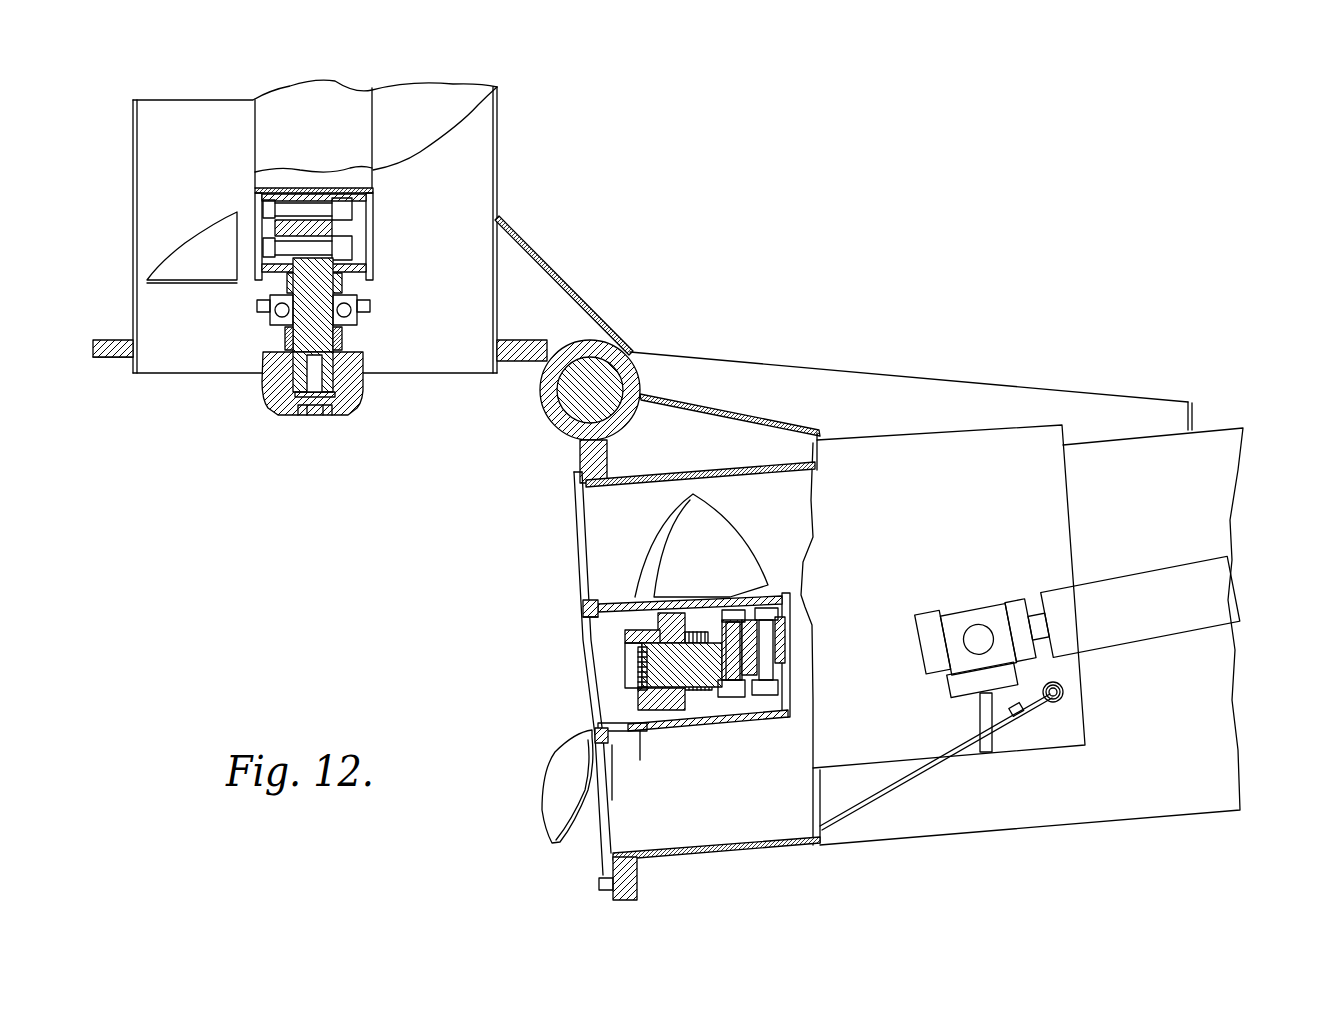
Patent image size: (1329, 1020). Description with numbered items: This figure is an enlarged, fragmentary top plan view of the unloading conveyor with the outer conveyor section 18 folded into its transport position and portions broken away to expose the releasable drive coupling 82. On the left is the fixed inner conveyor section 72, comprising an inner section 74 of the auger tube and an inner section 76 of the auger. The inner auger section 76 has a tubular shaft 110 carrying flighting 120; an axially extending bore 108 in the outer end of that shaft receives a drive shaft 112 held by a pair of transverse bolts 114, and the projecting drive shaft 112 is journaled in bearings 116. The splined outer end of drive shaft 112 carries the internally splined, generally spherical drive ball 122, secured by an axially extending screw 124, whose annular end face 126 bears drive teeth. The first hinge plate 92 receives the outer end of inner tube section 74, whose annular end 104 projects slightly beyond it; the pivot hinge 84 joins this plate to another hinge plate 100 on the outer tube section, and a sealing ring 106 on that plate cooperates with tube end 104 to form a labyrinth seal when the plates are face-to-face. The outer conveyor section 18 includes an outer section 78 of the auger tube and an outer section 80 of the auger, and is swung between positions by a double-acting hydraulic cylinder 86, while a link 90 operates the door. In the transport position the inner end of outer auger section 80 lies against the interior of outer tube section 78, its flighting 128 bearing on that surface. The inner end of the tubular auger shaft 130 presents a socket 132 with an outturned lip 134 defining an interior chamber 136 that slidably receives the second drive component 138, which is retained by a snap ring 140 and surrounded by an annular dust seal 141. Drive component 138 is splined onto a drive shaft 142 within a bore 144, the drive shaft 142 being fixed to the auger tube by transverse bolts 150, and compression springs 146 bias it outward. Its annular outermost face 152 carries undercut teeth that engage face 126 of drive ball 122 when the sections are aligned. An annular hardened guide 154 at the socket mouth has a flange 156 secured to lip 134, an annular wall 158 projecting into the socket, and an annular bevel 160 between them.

The outer conveyor section 18 is at (1212, 420).
The inner conveyor section 72 is at (502, 130).
The inner section of auger tube 74 is at (133, 222).
The inner section of auger 76 is at (252, 151).
The outer section of auger tube 78 is at (1095, 815).
The outer section of auger 80 is at (803, 725).
The releasable drive coupling 82 is at (272, 432).
The pivot hinge 84 is at (541, 424).
The double-acting hydraulic cylinder 86 is at (1190, 578).
The link 90 is at (890, 787).
The first hinge plate 92 is at (105, 338).
The hinge plate 100 is at (636, 880).
The annular end of inner tube section 104 is at (133, 373).
The sealing ring 106 is at (578, 483).
The axially extending bore 108 is at (287, 270).
The tubular shaft 110 is at (318, 112).
The drive shaft 112 is at (315, 328).
The transverse bolts 114 is at (352, 210).
The bearings 116 is at (366, 303).
The flighting 120 is at (418, 140).
The drive ball 122 is at (272, 390).
The axially extending screw 124 is at (322, 410).
The annular end face 126 is at (345, 418).
The flighting 128 is at (546, 796).
The tubular auger shaft 130 is at (805, 598).
The socket 132 is at (635, 731).
The outturned lip 134 is at (606, 745).
The interior chamber 136 is at (612, 625).
The second drive component 138 is at (720, 712).
The snap ring 140 is at (672, 718).
The annular dust seal 141 is at (661, 625).
The drive shaft 142 is at (640, 670).
The bore 144 is at (757, 655).
The compression springs 146 is at (700, 630).
The transverse bolts 150 is at (780, 635).
The annular outermost face 152 is at (636, 645).
The annular hardened guide 154 is at (573, 612).
The flange 156 is at (582, 738).
The annular wall 158 is at (622, 718).
The annular bevel 160 is at (574, 618).